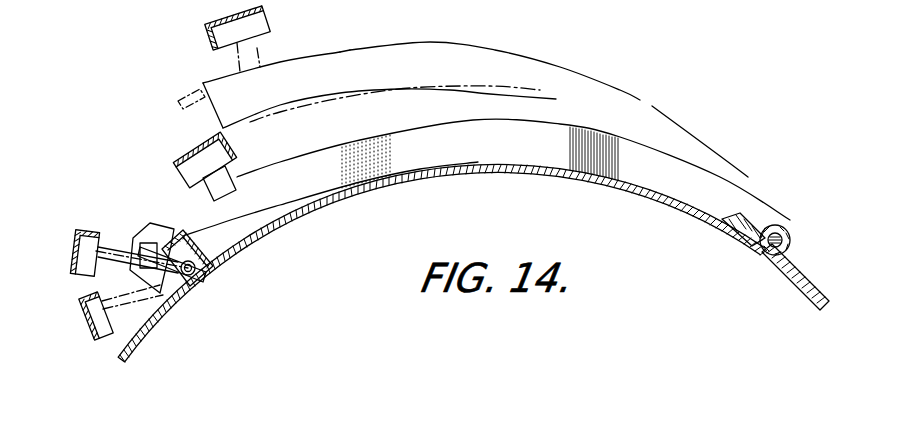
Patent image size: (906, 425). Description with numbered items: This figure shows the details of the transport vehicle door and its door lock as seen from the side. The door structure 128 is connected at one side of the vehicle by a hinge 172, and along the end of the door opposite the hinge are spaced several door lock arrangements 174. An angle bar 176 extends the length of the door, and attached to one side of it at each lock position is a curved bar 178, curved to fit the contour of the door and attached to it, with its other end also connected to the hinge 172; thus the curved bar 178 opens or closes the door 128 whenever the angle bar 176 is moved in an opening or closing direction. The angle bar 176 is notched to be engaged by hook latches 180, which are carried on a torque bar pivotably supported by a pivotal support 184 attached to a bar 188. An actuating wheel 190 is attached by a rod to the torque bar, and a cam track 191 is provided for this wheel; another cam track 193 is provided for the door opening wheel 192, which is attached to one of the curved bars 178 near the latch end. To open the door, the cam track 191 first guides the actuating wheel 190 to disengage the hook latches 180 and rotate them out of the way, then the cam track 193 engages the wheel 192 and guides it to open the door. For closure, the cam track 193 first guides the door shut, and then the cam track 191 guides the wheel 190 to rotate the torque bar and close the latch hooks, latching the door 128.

The door structure 128 is at (375, 97).
The hinge 172 is at (782, 237).
The door lock arrangement 174 is at (122, 209).
The angle bar 176 is at (196, 106).
The curved bar 178 is at (499, 50).
The hook latch 180 is at (158, 232).
The pivotal support 184 is at (182, 284).
The bar 188 is at (208, 274).
The actuating wheel 190 is at (213, 50).
The cam track 191 is at (76, 244).
The door opening wheel 192 is at (236, 156).
The cam track 193 is at (268, 20).